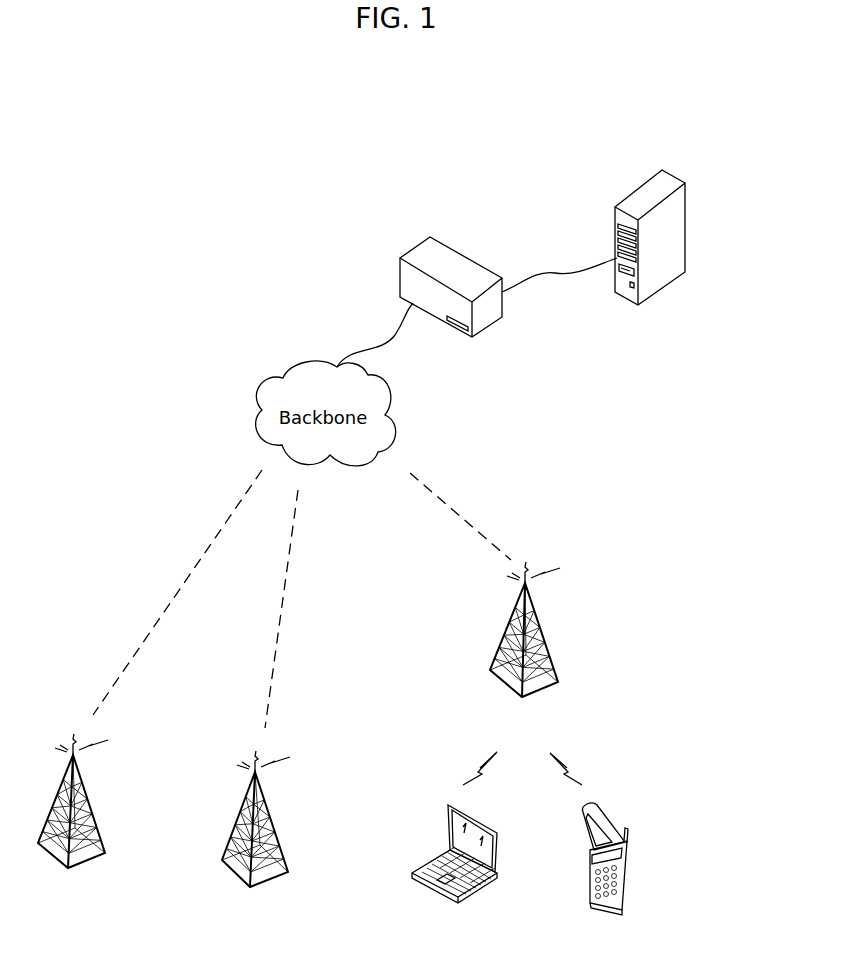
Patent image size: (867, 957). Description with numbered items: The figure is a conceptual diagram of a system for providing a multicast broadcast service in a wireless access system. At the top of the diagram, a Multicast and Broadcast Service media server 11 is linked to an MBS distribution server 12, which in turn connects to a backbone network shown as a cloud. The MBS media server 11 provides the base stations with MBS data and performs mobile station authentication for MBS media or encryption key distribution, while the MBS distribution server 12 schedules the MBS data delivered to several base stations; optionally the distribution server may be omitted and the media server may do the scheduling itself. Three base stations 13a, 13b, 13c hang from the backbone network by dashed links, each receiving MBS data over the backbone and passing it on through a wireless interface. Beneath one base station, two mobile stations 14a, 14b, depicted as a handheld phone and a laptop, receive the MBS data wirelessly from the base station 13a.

The MBS media server 11 is at (647, 188).
The MBS distribution server 12 is at (458, 262).
The base station 13a is at (547, 635).
The base station 13b is at (273, 822).
The base station 13c is at (92, 808).
The mobile station 14a is at (627, 880).
The mobile station 14b is at (432, 880).